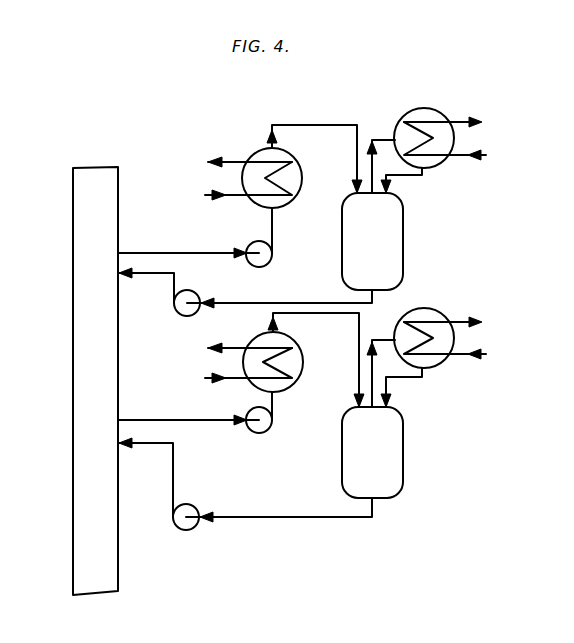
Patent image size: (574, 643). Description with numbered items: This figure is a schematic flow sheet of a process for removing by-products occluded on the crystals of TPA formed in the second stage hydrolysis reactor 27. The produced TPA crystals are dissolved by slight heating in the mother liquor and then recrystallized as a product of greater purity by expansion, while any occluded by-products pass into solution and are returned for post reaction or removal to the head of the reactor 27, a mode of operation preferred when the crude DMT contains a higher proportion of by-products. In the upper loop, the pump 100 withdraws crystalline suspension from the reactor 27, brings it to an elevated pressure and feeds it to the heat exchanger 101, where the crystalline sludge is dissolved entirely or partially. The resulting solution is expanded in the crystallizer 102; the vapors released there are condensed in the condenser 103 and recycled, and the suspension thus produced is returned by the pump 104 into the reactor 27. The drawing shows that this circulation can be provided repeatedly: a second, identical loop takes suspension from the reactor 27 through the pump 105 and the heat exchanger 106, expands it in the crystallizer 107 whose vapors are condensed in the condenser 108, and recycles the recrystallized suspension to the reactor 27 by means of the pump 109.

The reactor 27 is at (73, 340).
The pump 100 is at (268, 263).
The heat exchanger 101 is at (258, 149).
The crystallizer 102 is at (405, 238).
The condenser 103 is at (441, 114).
The pump 104 is at (181, 313).
The pump 105 is at (268, 430).
The heat exchanger 106 is at (297, 346).
The crystallizer 107 is at (406, 451).
The condenser 108 is at (443, 318).
The pump 109 is at (192, 530).